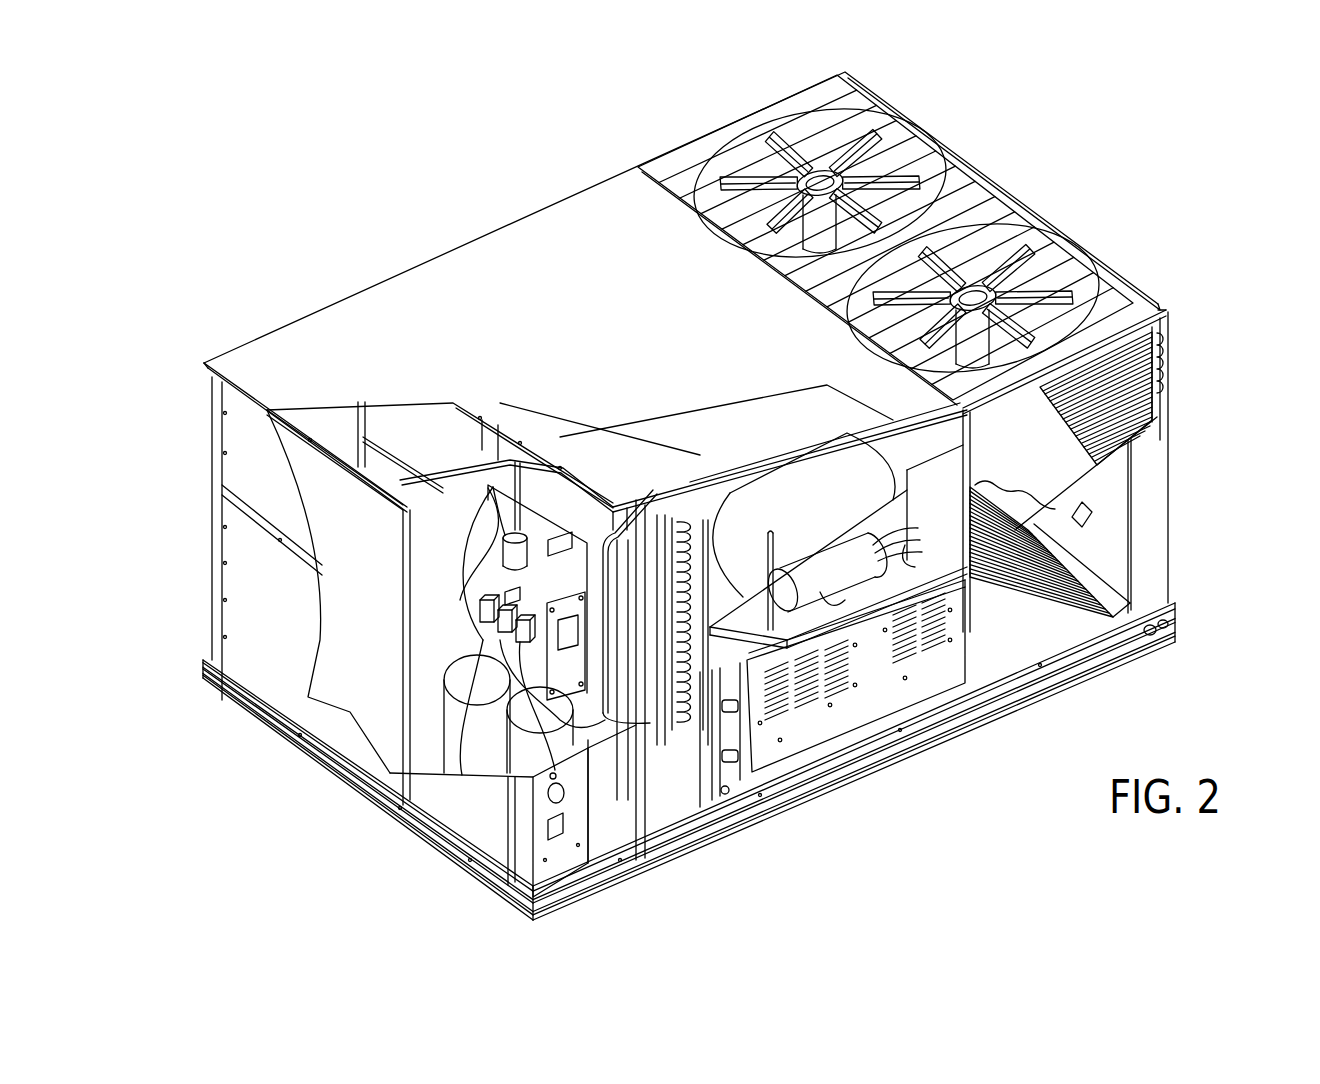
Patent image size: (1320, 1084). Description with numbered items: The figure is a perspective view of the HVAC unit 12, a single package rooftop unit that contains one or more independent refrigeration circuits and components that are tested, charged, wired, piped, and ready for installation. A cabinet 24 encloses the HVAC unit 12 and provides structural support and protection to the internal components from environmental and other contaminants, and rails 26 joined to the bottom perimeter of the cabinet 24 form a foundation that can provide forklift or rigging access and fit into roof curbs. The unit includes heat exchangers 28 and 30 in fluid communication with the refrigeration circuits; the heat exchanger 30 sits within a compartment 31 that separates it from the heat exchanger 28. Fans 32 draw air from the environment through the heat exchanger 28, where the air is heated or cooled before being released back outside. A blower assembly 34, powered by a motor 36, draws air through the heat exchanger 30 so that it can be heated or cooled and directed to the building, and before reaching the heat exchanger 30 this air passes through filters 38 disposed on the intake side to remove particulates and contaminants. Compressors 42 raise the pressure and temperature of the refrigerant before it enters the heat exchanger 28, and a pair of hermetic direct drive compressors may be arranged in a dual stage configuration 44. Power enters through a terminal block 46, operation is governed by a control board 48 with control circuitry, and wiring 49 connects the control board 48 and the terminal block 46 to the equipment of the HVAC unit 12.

The HVAC unit 12 is at (396, 178).
The cabinet 24 is at (250, 626).
The rails 26 is at (268, 730).
The heat exchanger 28 is at (1170, 386).
The heat exchanger 30 is at (688, 705).
The compartment 31 is at (703, 552).
The fans 32 is at (993, 247).
The blower assembly 34 is at (893, 510).
The motor 36 is at (827, 560).
The filters 38 is at (647, 520).
The compressors 42 is at (447, 712).
The dual stage configuration 44 is at (438, 664).
The terminal block 46 is at (495, 598).
The control board 48 is at (572, 617).
The wiring 49 is at (660, 500).